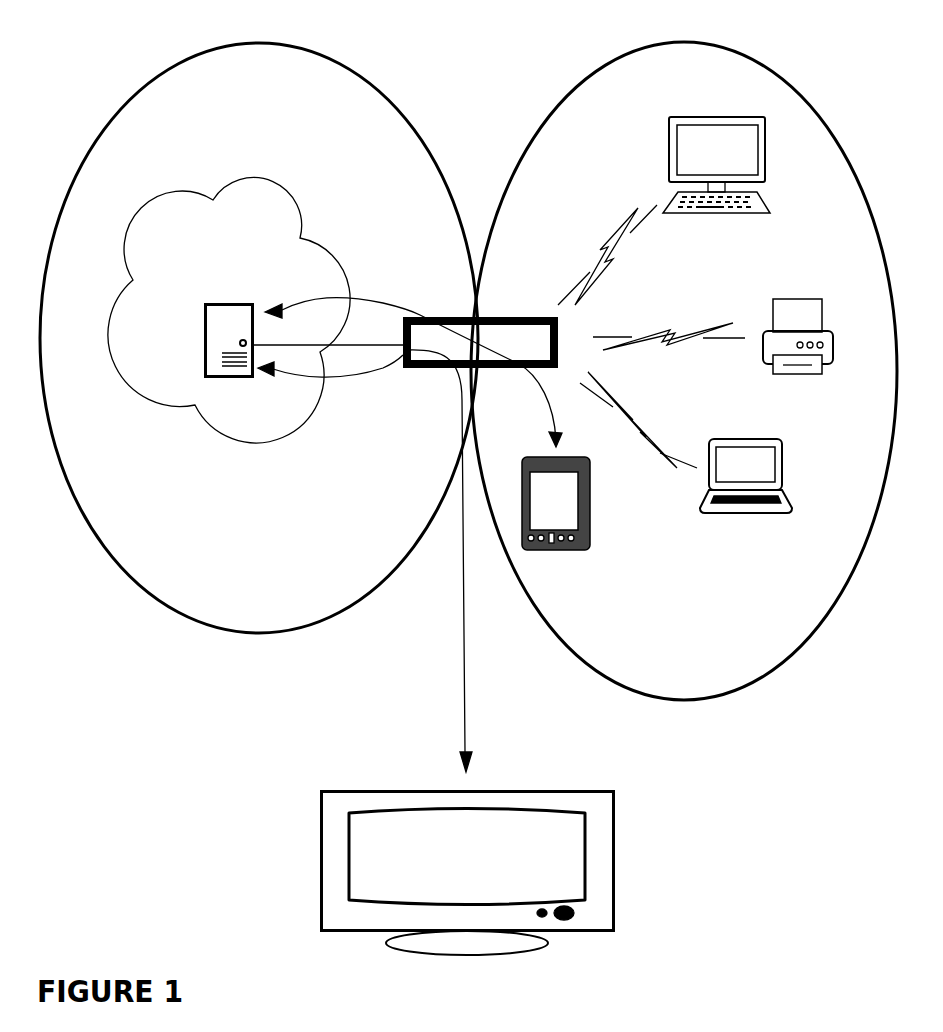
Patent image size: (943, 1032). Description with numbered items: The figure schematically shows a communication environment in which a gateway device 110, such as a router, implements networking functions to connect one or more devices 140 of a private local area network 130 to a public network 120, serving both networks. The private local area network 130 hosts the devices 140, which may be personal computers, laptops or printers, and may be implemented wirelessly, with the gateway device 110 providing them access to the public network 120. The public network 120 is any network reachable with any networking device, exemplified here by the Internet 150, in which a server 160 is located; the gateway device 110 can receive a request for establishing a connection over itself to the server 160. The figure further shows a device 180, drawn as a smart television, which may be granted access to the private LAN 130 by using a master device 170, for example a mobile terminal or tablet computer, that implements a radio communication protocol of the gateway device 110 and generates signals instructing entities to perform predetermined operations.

The gateway device 110 is at (521, 317).
The public network 120 is at (377, 91).
The private local area network 130 is at (790, 77).
The devices 140 is at (760, 206).
The Internet 150 is at (215, 432).
The server 160 is at (205, 318).
The master device 170 is at (578, 552).
The device 180 is at (615, 842).